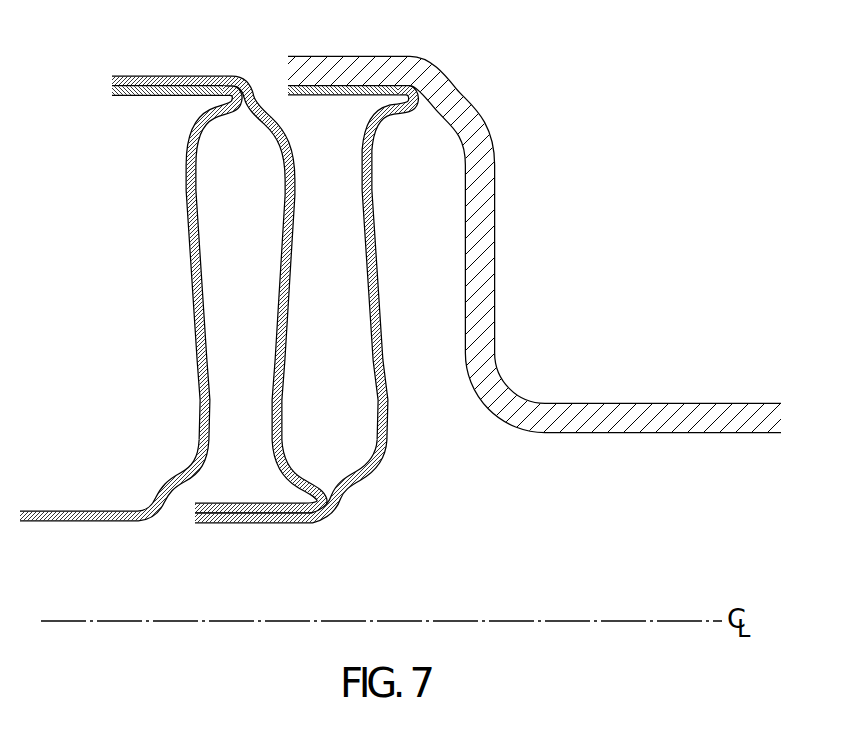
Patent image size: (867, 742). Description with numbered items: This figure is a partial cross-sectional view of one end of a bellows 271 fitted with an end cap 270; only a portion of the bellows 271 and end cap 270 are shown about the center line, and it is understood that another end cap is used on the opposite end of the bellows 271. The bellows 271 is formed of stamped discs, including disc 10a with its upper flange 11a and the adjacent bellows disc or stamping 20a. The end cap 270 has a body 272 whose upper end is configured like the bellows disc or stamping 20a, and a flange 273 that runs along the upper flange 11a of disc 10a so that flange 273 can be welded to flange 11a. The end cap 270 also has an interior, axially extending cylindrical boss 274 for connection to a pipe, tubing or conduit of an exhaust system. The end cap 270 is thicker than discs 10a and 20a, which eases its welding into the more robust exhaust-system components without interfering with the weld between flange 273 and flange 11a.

The disc 10a is at (371, 325).
The upper flange 11a is at (356, 95).
The bellows disc or stamping 20a is at (272, 306).
The end cap 270 is at (534, 220).
The bellows 271 is at (163, 53).
The body 272 is at (496, 240).
The flange 273 is at (374, 56).
The cylindrical boss 274 is at (690, 403).